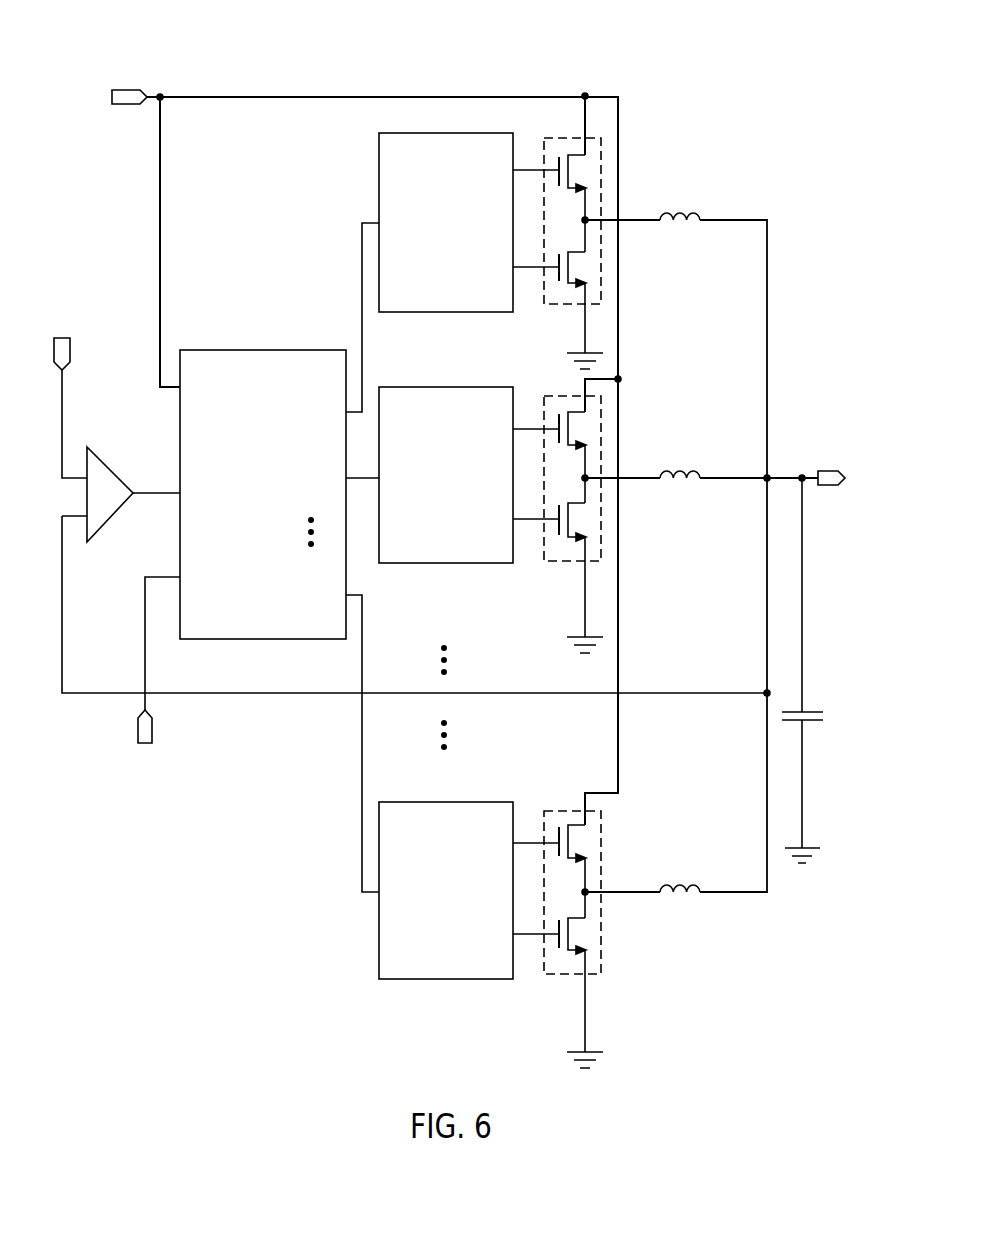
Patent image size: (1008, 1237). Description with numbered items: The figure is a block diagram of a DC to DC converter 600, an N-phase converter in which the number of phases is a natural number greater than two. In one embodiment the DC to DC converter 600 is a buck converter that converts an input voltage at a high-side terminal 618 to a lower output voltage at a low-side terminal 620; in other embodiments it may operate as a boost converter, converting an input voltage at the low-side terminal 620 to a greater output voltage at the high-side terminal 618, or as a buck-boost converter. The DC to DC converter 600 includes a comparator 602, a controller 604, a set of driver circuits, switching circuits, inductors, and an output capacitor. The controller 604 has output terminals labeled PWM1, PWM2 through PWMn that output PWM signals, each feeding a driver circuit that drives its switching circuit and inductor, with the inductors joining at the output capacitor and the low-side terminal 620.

The DC to DC converter 600 is at (682, 78).
The comparator 602 is at (105, 523).
The controller 604 is at (235, 639).
The high-side terminal 618 is at (128, 90).
The low-side terminal 620 is at (825, 470).